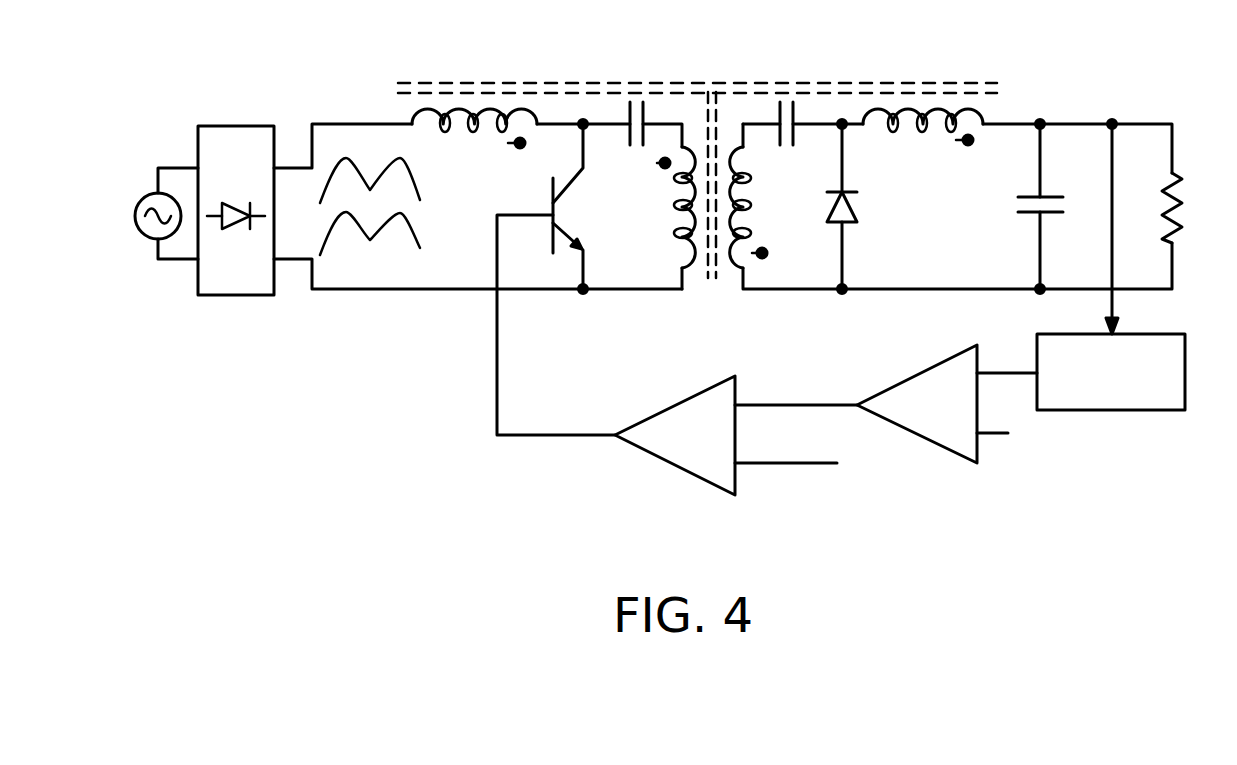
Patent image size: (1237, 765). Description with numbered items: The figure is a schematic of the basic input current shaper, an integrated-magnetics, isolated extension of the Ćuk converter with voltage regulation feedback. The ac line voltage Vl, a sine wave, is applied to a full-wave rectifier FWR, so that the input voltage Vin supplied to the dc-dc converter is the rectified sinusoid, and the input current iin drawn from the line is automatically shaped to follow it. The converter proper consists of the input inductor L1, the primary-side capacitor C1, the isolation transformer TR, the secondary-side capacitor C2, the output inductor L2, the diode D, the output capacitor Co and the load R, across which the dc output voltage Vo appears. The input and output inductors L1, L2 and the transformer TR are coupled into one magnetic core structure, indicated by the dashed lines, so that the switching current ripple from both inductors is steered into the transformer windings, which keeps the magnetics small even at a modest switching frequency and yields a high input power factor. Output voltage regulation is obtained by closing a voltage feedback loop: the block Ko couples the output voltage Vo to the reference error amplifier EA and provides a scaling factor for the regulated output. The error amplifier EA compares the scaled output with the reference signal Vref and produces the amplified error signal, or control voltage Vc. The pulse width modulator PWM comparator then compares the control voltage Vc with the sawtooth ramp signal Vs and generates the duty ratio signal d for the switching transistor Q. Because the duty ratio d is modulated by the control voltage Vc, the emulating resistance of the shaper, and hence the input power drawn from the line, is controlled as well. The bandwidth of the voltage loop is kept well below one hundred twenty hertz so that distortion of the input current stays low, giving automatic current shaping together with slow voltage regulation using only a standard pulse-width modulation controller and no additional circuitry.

The line voltage Vl is at (145, 213).
The full-wave rectifier FWR is at (236, 195).
The input voltage Vin is at (388, 177).
The input current iin is at (388, 233).
The input inductor L1 is at (474, 96).
The primary-side capacitor C1 is at (641, 91).
The isolation transformer TR is at (697, 205).
The secondary-side capacitor C2 is at (789, 91).
The output inductor L2 is at (923, 92).
The diode D is at (858, 206).
The output capacitor Co is at (1020, 206).
The load R is at (1186, 208).
The output voltage Vo is at (1109, 210).
The switching transistor Q is at (557, 279).
The pulse width modulator comparator PWM is at (675, 435).
The duty ratio signal d is at (551, 458).
The control voltage Vc is at (796, 386).
The sawtooth ramp signal Vs is at (830, 503).
The reference error amplifier EA is at (947, 404).
The reference signal Vref is at (1028, 447).
The scaling block Ko is at (1111, 372).